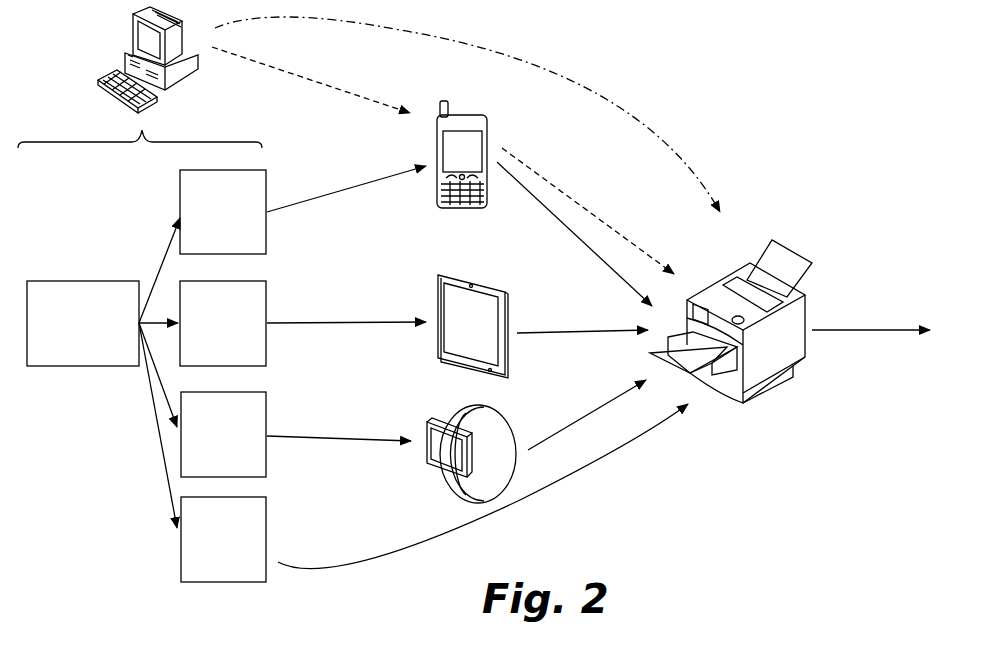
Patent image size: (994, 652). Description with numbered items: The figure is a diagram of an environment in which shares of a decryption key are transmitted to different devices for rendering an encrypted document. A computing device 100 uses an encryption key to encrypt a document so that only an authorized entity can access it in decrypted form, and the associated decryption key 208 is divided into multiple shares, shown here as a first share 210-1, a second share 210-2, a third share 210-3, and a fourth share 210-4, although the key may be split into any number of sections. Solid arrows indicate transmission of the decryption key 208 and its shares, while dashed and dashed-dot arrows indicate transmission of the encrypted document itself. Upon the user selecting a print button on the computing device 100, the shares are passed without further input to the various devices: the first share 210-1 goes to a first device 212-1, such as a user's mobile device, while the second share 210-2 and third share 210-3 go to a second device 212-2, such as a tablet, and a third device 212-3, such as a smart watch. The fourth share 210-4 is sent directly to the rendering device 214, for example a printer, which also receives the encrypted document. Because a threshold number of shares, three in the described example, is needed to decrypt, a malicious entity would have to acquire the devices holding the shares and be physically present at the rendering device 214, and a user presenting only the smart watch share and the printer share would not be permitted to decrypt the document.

The computing device 100 is at (80, 67).
The decryption key 208 is at (83, 323).
The first share 210-1 is at (223, 212).
The second share 210-2 is at (223, 323).
The third share 210-3 is at (223, 434).
The fourth share 210-4 is at (223, 539).
The first device 212-1 is at (450, 168).
The second device 212-2 is at (450, 340).
The third device 212-3 is at (452, 462).
The rendering device 214 is at (773, 357).